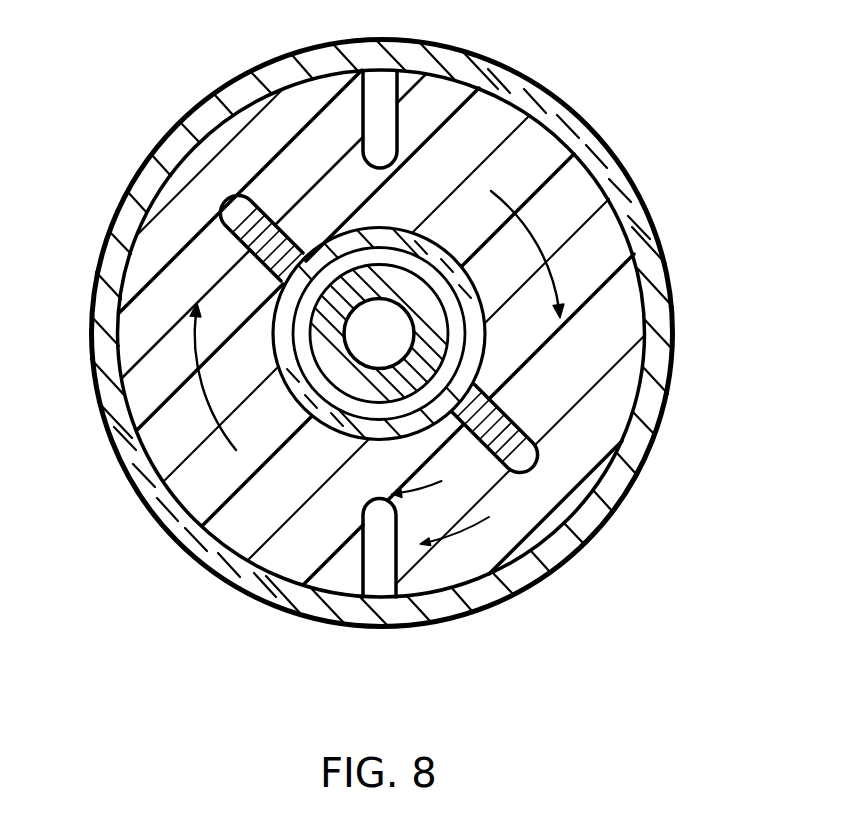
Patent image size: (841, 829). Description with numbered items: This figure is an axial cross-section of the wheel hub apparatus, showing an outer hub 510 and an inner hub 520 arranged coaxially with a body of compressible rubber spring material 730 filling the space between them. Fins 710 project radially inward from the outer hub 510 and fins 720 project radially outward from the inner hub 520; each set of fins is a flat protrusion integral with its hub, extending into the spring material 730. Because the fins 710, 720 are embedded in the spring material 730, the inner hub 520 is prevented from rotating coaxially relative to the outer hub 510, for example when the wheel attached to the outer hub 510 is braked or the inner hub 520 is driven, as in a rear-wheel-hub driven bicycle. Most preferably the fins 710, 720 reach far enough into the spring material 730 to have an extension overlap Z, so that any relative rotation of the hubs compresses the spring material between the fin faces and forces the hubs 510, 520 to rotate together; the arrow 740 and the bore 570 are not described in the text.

The outer hub 510 is at (643, 224).
The inner hub 520 is at (330, 428).
The central lumen 570 is at (437, 348).
The fins 710 is at (388, 155).
The fins 720 is at (240, 217).
The compressible rubber spring material 730 is at (277, 130).
The rotation direction arrow 740 is at (160, 433).
The extension overlap Z is at (441, 513).